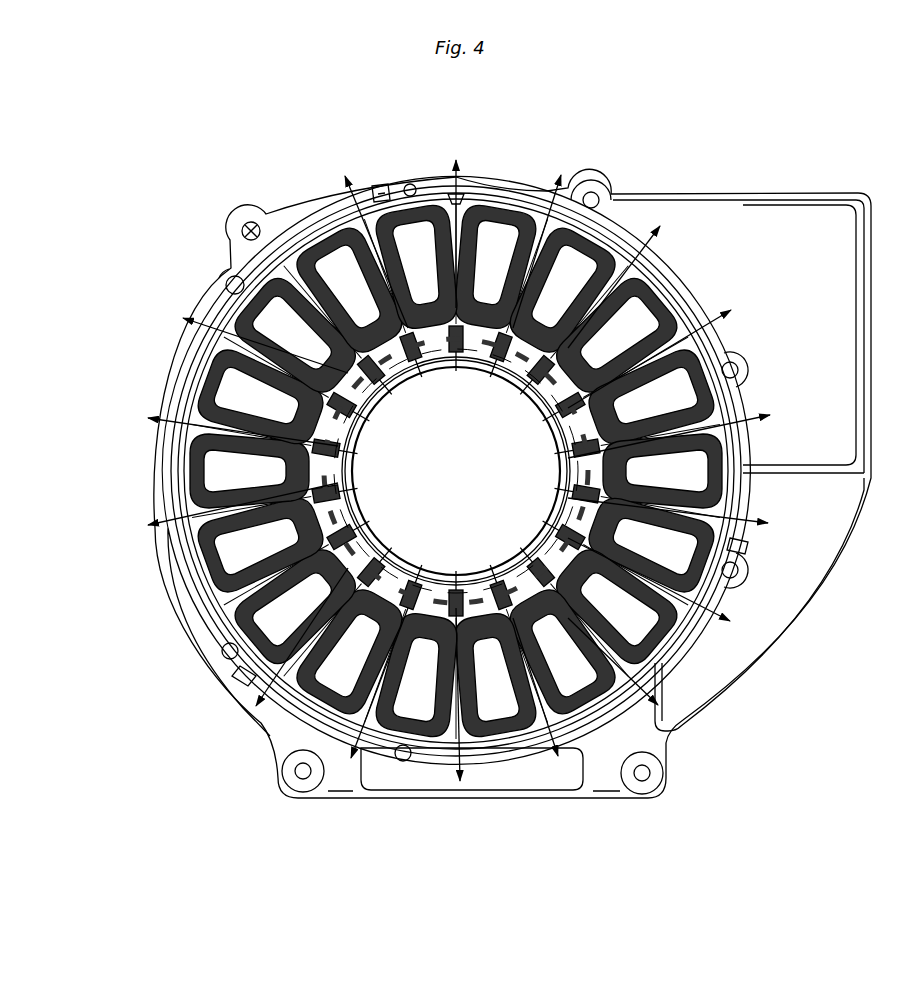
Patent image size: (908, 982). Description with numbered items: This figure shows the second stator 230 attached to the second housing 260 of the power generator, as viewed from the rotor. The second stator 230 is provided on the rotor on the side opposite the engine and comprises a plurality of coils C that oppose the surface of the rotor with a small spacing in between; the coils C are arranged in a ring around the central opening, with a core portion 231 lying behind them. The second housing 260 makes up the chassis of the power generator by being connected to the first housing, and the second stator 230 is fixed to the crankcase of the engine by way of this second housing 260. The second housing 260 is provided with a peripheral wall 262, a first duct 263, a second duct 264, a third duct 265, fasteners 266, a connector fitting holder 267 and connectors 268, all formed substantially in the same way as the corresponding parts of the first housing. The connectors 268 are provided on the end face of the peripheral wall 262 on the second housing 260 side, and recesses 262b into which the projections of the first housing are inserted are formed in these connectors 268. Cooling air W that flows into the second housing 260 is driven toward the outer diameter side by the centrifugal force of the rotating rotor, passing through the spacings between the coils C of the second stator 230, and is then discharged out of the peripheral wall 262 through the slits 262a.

The second housing 260 is at (205, 195).
The second stator 230 is at (207, 305).
The core back 231 is at (187, 407).
The coils C is at (192, 377).
The cooling air W is at (459, 470).
The peripheral wall 262 is at (313, 213).
The slits 262a is at (449, 187).
The recesses 262b is at (404, 176).
The first duct 263 is at (777, 185).
The second duct 264 is at (793, 592).
The third duct 265 is at (421, 783).
The fasteners 266 is at (593, 182).
The connector fitting holder 267 is at (463, 380).
The connectors 268 is at (372, 180).